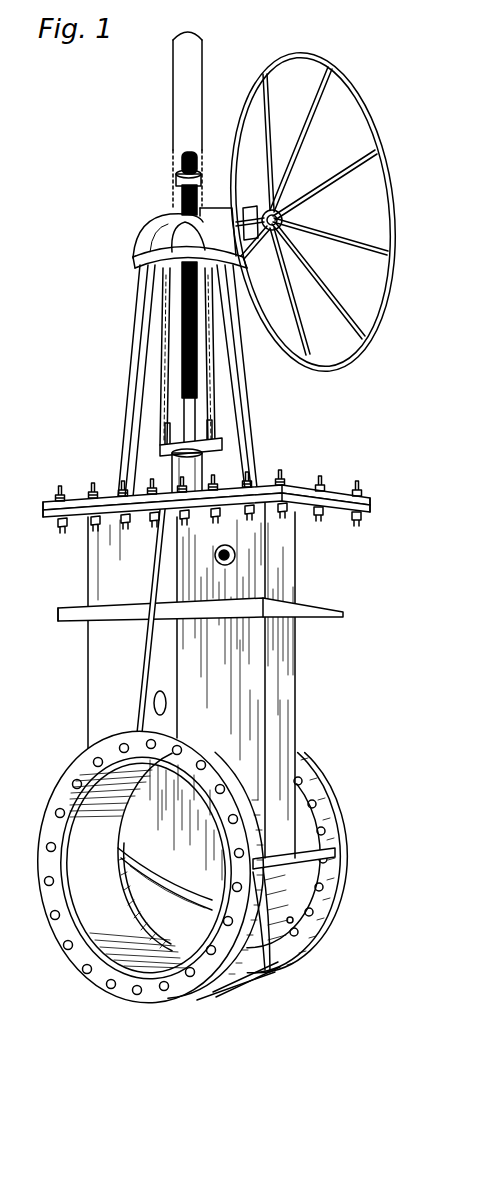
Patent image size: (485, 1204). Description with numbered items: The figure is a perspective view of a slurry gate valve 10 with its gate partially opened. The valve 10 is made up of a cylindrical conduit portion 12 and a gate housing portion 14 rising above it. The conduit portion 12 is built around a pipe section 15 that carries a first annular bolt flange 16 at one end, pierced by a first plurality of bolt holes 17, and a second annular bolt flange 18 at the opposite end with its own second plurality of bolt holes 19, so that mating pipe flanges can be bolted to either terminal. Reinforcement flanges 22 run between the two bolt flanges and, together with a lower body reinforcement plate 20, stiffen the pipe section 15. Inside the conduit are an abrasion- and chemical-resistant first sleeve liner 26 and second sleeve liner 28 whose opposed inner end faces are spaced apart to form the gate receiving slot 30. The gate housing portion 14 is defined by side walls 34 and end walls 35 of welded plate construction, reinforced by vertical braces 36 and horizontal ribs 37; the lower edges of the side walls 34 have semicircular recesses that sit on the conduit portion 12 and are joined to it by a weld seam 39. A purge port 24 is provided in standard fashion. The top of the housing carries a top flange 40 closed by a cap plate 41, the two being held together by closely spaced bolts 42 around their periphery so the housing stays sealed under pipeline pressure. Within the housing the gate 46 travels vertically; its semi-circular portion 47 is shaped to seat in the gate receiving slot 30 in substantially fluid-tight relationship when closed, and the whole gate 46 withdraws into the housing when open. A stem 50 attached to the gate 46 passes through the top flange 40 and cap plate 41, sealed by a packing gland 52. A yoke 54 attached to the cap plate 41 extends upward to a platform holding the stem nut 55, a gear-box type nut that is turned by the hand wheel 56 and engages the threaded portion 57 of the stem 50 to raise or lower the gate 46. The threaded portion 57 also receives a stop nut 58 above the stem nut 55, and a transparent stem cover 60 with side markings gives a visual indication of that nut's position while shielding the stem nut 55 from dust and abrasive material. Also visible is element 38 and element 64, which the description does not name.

The slurry gate valve 10 is at (124, 352).
The cylindrical conduit portion 12 is at (297, 905).
The gate housing portion 14 is at (277, 668).
The pipe section 15 is at (292, 922).
The first annular bolt flange 16 is at (104, 986).
The first plurality of bolt holes 17 is at (118, 992).
The second annular bolt flange 18 is at (318, 786).
The second plurality of bolt holes 19 is at (316, 812).
The lower body reinforcement plate 20 is at (248, 958).
The reinforcement flanges 22 is at (335, 852).
The purge port 24 is at (228, 565).
The first sleeve liner 26 is at (86, 918).
The second sleeve liner 28 is at (187, 922).
The gate receiving slot 30 is at (128, 884).
The side walls 34 is at (105, 672).
The end walls 35 is at (288, 567).
The vertical braces 36 is at (154, 698).
The horizontal ribs 37 is at (320, 605).
The gate guide 38 is at (250, 775).
The weld seam 39 is at (292, 842).
The top flange 40 is at (330, 510).
The cap plate 41 is at (336, 490).
The bolts 42 is at (319, 478).
The gate 46 is at (178, 842).
The semi-circular portion 47 is at (170, 896).
The stem 50 is at (190, 412).
The packing gland 52 is at (196, 460).
The yoke 54 is at (128, 398).
The stem nut 55 is at (152, 279).
The hand wheel 56 is at (395, 180).
The threaded portion 57 is at (198, 386).
The stop nut 58 is at (175, 180).
The stem cover 60 is at (175, 60).
The indicator rod 64 is at (150, 715).